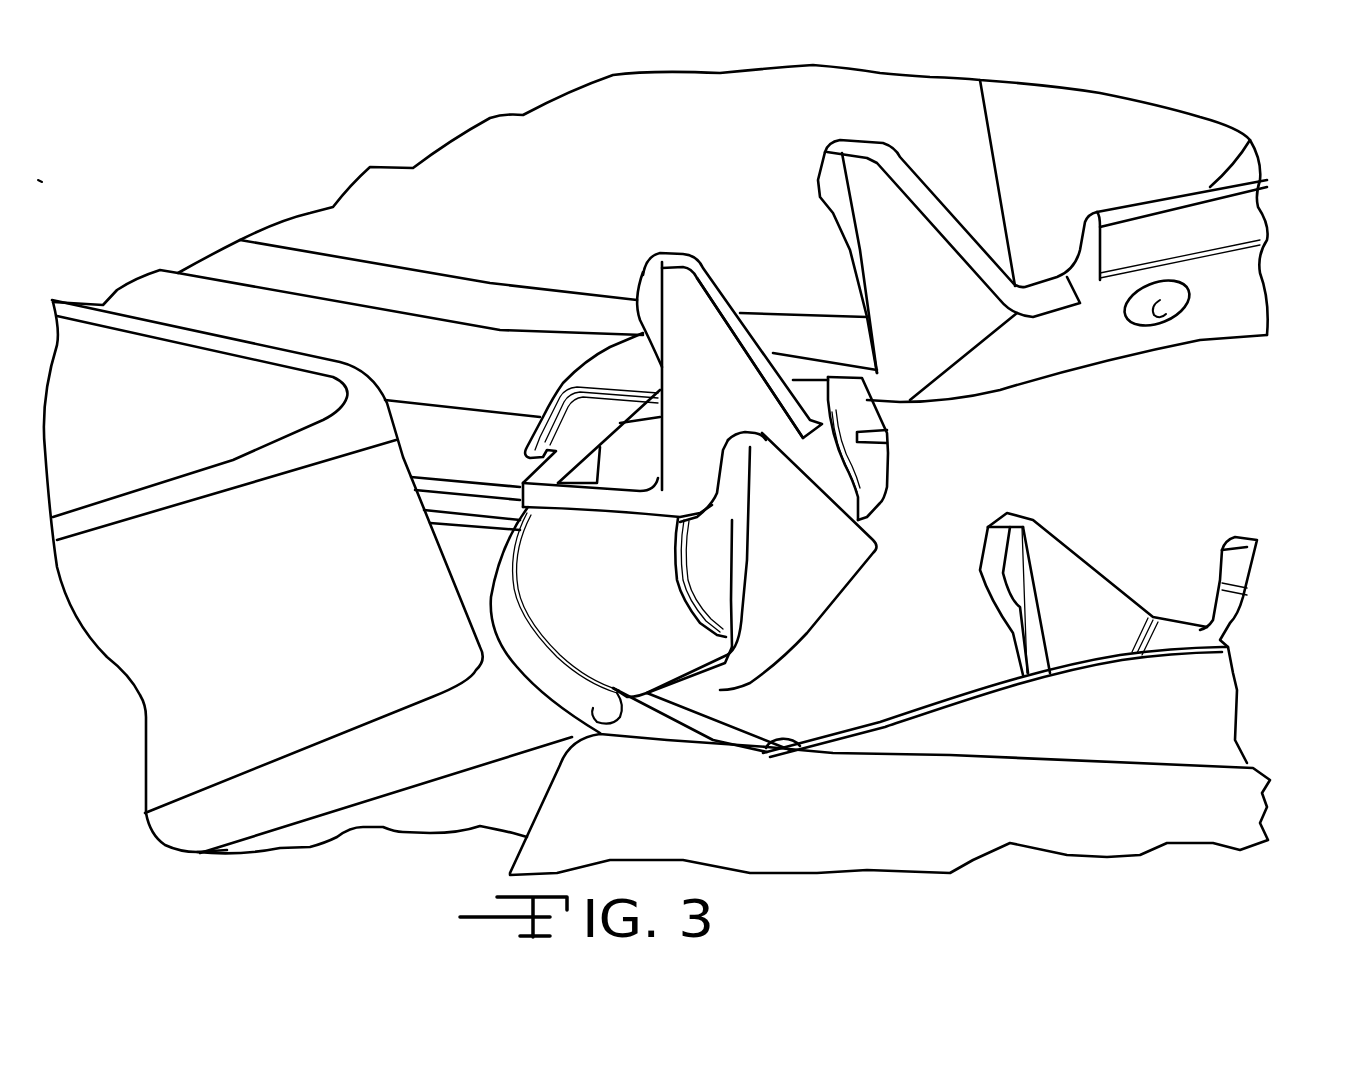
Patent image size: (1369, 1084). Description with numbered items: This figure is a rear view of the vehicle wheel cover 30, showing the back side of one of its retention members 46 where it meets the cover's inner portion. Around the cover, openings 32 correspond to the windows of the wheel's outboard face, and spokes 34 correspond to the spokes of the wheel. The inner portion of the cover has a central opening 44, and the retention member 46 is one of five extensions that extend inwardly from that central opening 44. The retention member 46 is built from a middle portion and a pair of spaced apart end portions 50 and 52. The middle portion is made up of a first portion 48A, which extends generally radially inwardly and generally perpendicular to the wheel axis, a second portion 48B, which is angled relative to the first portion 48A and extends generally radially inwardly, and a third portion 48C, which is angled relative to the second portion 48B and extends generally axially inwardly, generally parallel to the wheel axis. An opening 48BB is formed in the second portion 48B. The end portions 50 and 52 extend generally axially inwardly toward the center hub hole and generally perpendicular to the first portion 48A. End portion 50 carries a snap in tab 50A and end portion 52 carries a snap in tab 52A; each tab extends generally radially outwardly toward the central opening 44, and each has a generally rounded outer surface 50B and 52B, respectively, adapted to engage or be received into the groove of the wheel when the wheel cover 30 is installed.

The vehicle wheel cover 30 is at (1236, 810).
The openings 32 is at (207, 470).
The spokes 34 is at (453, 803).
The central opening 44 is at (807, 748).
The retention member 46 is at (895, 520).
The first portion 48A is at (617, 637).
The second portion 48B is at (1060, 347).
The opening 48BB is at (1160, 307).
The third portion 48C is at (880, 457).
The end portion 50 is at (805, 636).
The snap in tab 50A is at (805, 537).
The rounded shaped outer surface 50B is at (740, 490).
The end portion 52 is at (676, 250).
The snap in tab 52A is at (713, 337).
The rounded shaped outer surface 52B is at (638, 292).